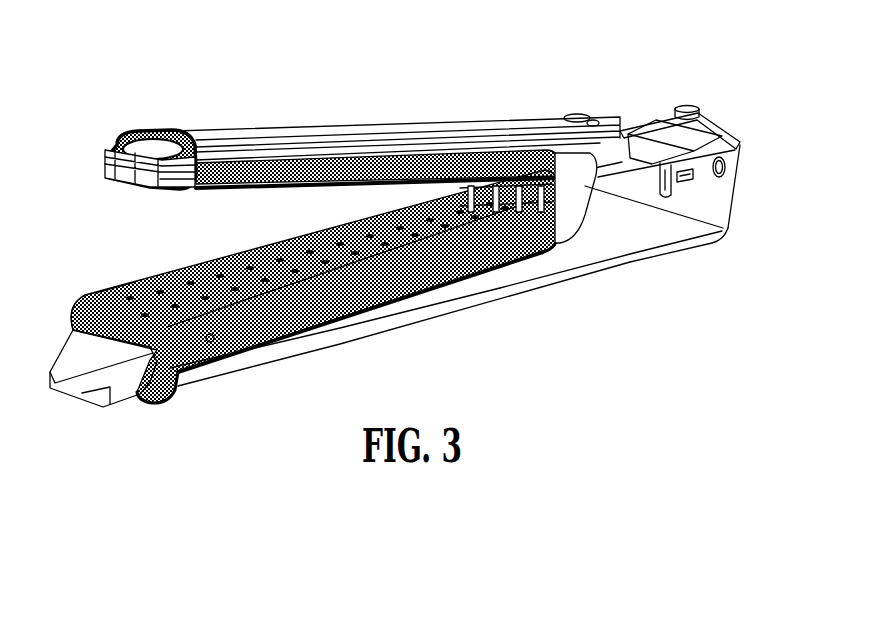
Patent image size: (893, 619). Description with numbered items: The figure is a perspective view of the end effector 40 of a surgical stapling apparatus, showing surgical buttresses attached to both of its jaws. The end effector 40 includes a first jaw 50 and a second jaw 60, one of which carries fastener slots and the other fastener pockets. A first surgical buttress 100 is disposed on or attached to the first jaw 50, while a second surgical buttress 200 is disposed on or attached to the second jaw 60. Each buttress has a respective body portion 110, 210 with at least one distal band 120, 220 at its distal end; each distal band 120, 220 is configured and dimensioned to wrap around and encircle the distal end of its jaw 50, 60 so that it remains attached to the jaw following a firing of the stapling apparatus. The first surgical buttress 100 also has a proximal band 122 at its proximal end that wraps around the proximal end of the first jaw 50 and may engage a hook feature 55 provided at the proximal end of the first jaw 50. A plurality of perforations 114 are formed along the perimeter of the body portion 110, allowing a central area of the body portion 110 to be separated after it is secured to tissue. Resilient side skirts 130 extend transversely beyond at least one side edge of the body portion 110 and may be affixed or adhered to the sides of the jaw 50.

The end effector 40 is at (644, 73).
The first jaw 50 is at (268, 357).
The hook feature 55 is at (727, 230).
The second jaw 60 is at (455, 118).
The first surgical buttress 100 is at (373, 312).
The body portion 110 is at (317, 243).
The perforations 114 is at (118, 292).
The distal band 120 is at (150, 405).
The proximal band 122 is at (526, 182).
The resilient side skirts 130 is at (517, 268).
The second surgical buttress 200 is at (363, 145).
The body portion 210 is at (307, 168).
The distal band 220 is at (130, 132).